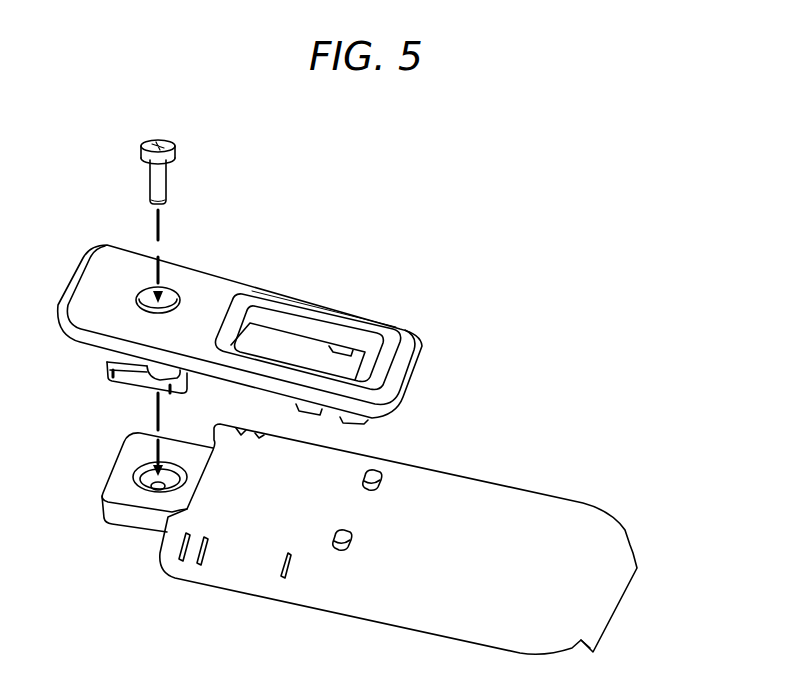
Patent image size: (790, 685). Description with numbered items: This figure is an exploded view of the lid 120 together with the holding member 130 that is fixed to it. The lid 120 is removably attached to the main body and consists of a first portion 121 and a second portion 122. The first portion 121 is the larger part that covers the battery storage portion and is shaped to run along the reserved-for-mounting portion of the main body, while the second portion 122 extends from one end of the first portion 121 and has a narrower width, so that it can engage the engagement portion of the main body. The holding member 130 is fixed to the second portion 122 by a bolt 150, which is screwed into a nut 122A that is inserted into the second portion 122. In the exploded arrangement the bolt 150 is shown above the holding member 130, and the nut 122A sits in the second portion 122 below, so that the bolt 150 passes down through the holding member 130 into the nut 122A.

The bolt 150 is at (150, 147).
The holding member 130 is at (205, 292).
The lid 120 is at (363, 539).
The first portion 121 is at (507, 505).
The second portion 122 is at (135, 508).
The nut 122A is at (157, 492).